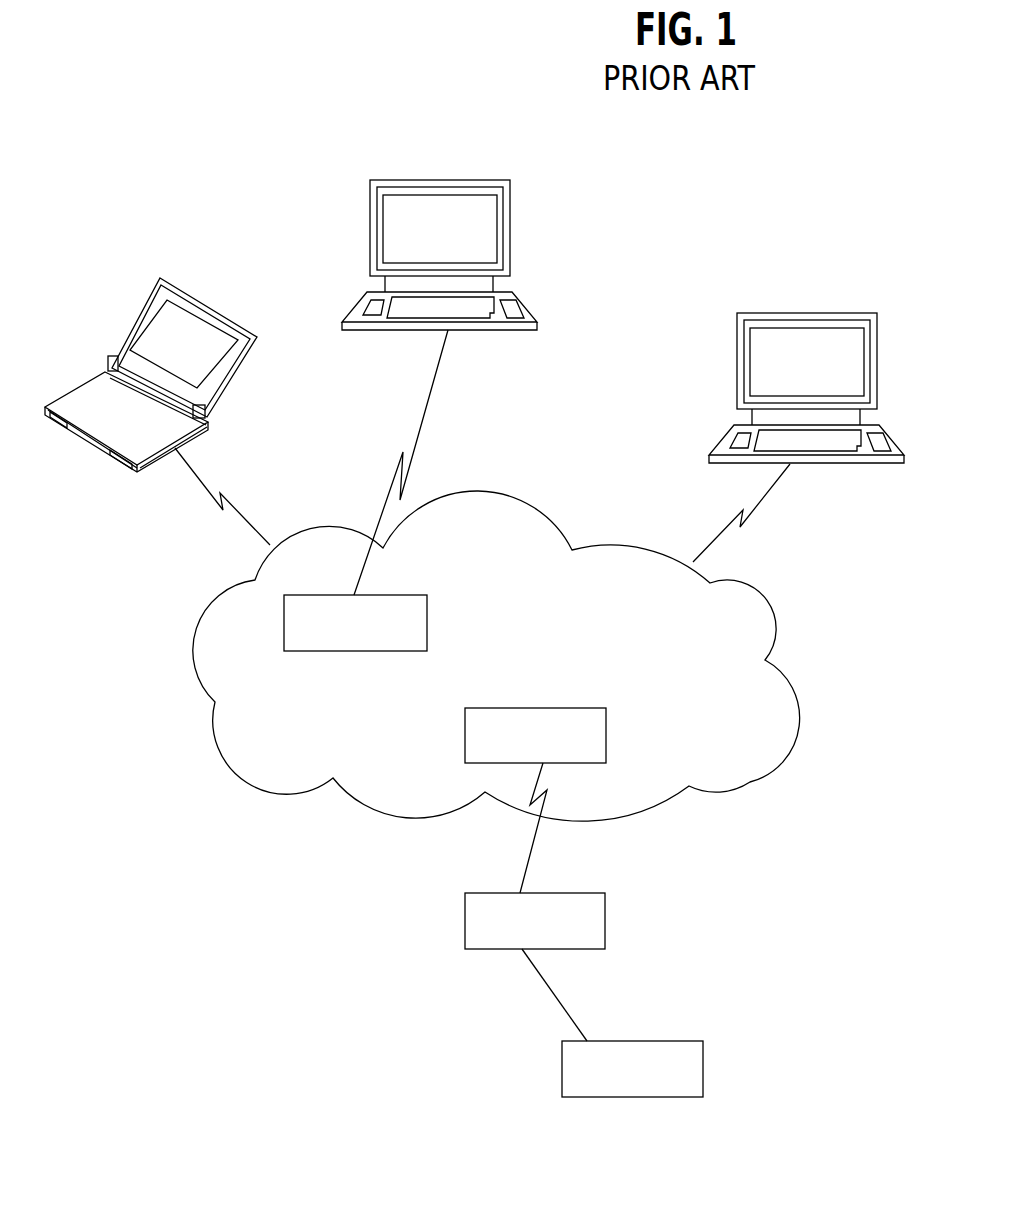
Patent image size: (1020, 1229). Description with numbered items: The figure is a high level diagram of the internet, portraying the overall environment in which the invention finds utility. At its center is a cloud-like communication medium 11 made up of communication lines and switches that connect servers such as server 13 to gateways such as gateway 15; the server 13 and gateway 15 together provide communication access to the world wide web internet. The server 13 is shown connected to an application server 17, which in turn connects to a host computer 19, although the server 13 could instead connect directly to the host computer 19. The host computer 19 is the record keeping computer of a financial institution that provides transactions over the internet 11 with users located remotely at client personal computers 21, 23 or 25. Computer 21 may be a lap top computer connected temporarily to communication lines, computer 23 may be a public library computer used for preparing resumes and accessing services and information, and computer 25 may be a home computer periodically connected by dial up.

The communication medium 11 is at (750, 782).
The server 13 is at (576, 705).
The gateway 15 is at (397, 590).
The application server 17 is at (607, 895).
The host computer 19 is at (682, 1038).
The client personal computer 21 is at (130, 323).
The client personal computer 23 is at (478, 180).
The client personal computer 25 is at (832, 313).